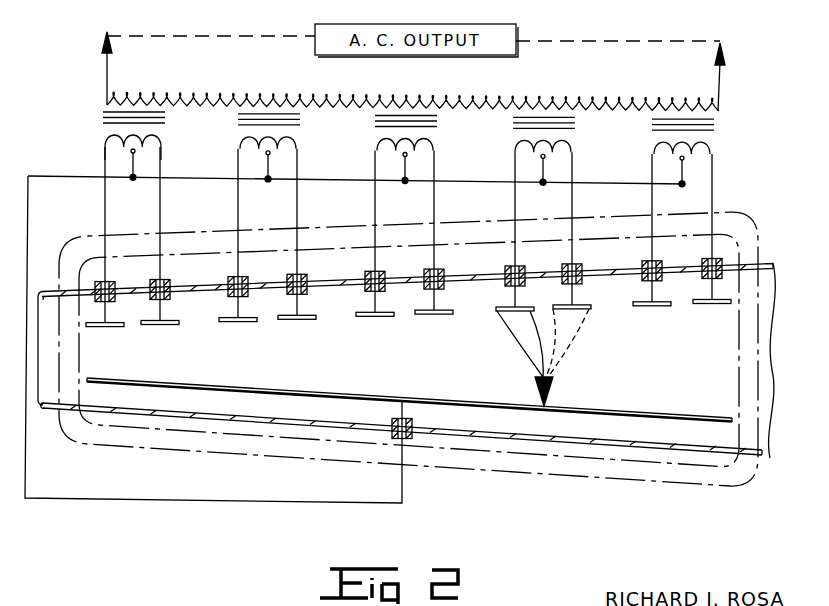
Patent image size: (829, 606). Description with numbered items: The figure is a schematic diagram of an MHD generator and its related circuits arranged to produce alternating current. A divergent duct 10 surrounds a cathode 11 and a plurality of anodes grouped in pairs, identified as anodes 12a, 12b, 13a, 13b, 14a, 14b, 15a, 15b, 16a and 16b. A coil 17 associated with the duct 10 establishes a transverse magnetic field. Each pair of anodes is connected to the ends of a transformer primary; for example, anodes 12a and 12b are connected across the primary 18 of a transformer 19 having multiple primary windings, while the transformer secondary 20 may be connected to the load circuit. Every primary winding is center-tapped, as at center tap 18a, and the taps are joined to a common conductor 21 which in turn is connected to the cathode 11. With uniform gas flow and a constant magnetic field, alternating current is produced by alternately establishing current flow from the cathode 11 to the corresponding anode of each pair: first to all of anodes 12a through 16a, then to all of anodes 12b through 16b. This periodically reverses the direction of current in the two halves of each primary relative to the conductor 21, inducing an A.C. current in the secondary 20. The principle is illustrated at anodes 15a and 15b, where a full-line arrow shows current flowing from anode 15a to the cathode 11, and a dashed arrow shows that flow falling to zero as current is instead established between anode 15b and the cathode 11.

The divergent duct 10 is at (248, 420).
The cathode 11 is at (301, 391).
The anode 12a is at (107, 327).
The anode 12b is at (164, 325).
The anode 13a is at (240, 322).
The anode 13b is at (303, 319).
The anode 14a is at (379, 316).
The anode 14b is at (439, 314).
The anode 15a is at (500, 313).
The anode 15b is at (569, 311).
The anode 16a is at (653, 306).
The anode 16b is at (709, 304).
The coil 17 is at (483, 470).
The primary 18 is at (106, 138).
The center tap 18a is at (136, 163).
The transformer 19 is at (92, 105).
The transformer secondary 20 is at (156, 95).
The common conductor 21 is at (209, 180).